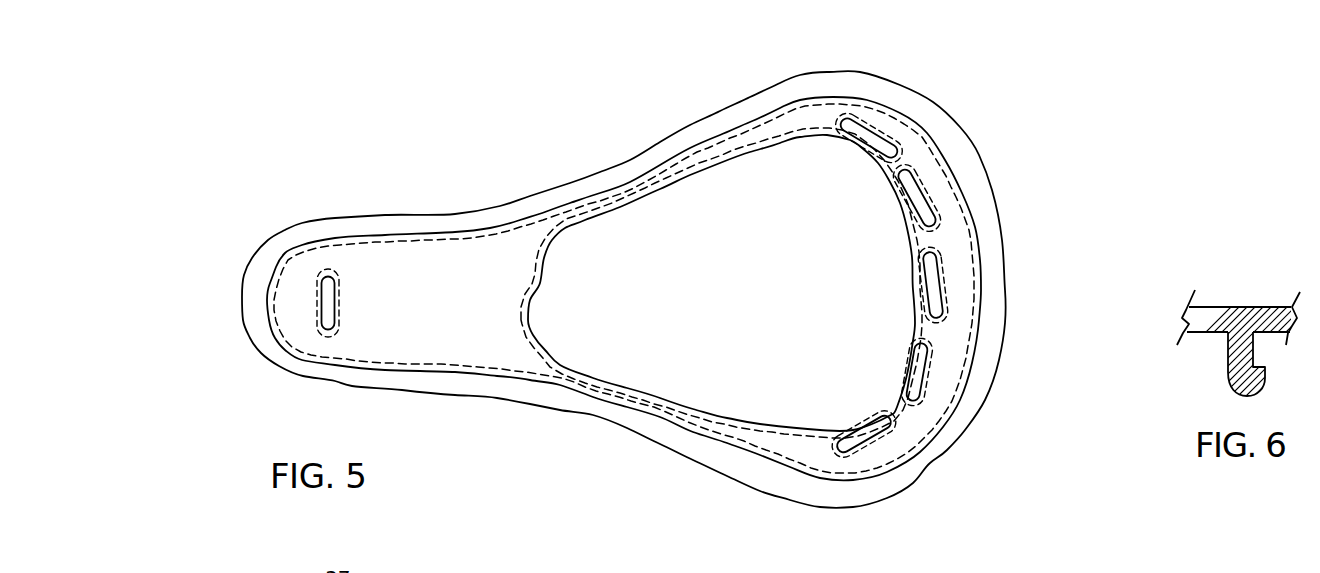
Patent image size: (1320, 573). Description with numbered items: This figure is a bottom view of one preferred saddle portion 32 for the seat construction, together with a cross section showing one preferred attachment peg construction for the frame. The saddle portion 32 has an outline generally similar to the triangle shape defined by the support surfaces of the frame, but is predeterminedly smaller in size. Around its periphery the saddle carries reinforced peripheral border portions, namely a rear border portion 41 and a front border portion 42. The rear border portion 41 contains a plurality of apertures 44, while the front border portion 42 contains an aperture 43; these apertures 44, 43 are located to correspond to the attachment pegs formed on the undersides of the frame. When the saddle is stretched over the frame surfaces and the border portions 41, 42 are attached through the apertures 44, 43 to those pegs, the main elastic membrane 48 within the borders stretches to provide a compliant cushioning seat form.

The saddle portion 32 is at (539, 165).
The rear border portion 41 is at (953, 290).
The front border portion 42 is at (302, 290).
The aperture 43 is at (329, 303).
The apertures 44 is at (930, 270).
The main elastic membrane 48 is at (257, 346).